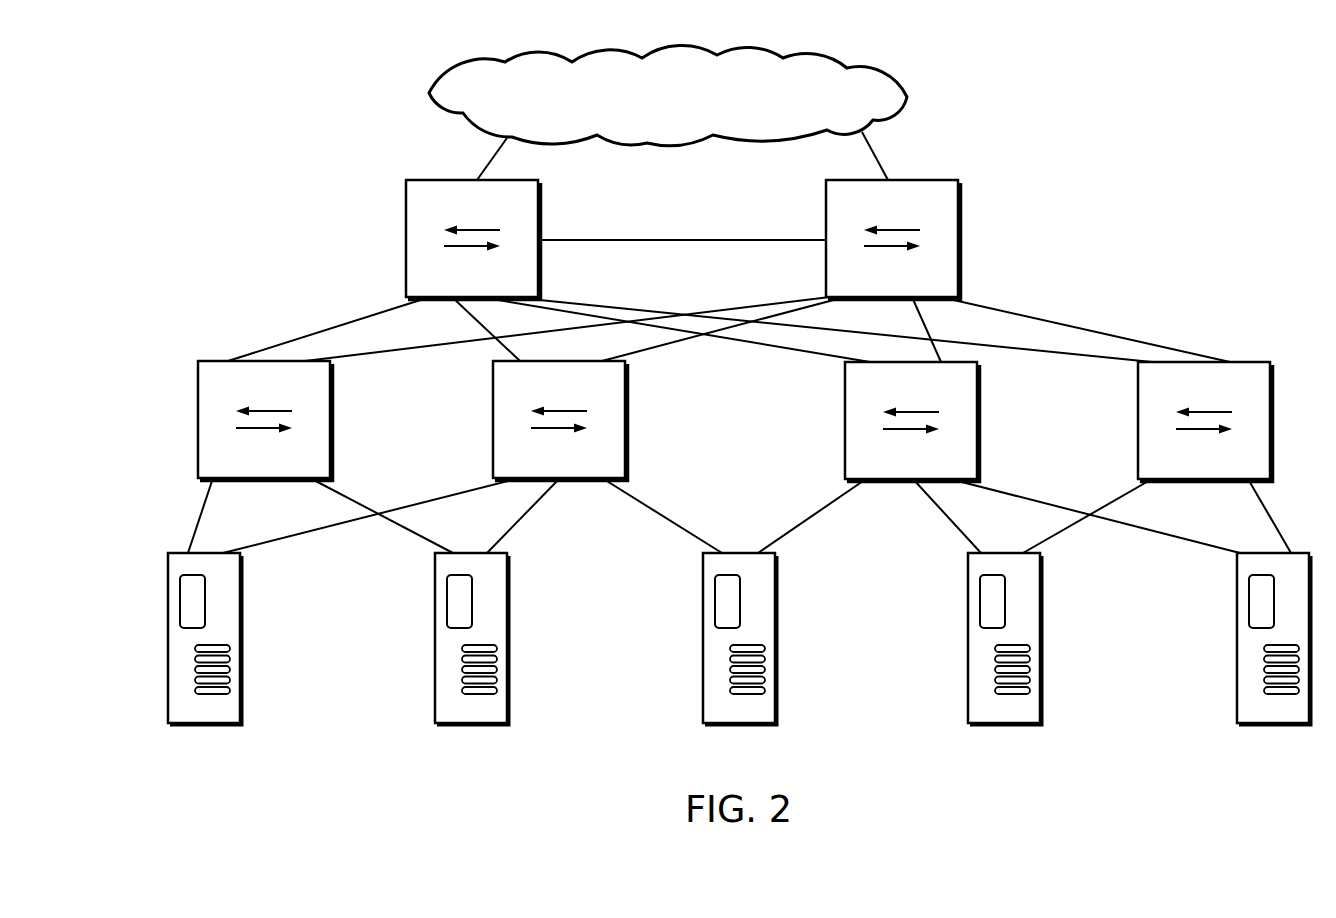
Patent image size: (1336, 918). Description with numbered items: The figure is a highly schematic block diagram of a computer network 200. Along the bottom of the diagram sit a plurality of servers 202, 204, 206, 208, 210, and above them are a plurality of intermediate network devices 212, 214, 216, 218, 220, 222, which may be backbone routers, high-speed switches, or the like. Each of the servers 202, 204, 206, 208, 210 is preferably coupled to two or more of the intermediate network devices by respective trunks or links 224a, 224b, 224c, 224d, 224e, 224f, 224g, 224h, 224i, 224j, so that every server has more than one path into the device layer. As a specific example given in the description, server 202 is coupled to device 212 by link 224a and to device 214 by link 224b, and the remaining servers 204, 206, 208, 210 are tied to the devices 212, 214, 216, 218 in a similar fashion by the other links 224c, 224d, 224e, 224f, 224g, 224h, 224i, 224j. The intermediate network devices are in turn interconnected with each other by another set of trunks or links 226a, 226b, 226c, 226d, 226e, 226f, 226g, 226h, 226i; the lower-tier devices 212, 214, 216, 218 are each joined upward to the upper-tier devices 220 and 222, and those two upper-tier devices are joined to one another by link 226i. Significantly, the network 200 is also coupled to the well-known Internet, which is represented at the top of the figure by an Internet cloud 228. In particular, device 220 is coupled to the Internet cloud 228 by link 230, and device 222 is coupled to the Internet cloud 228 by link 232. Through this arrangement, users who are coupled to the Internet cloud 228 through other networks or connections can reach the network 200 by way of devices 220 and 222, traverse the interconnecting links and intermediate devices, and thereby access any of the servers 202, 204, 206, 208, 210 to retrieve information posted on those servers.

The computer network 200 is at (1100, 146).
The server 202 is at (242, 651).
The server 204 is at (435, 651).
The server 206 is at (703, 651).
The server 208 is at (968, 651).
The server 210 is at (1237, 651).
The intermediate network device 212 is at (198, 420).
The intermediate network device 214 is at (627, 420).
The intermediate network device 216 is at (845, 421).
The intermediate network device 218 is at (1272, 421).
The intermediate network device 220 is at (406, 240).
The intermediate network device 222 is at (960, 240).
The link 224a is at (203, 507).
The link 224b is at (347, 495).
The link 224c is at (413, 538).
The link 224d is at (535, 505).
The link 224e is at (691, 537).
The link 224f is at (833, 502).
The link 224g is at (967, 541).
The link 224h is at (1115, 502).
The link 224i is at (1177, 540).
The link 224j is at (1270, 513).
The link 226a is at (336, 326).
The link 226b is at (453, 344).
The link 226c is at (481, 325).
The link 226d is at (683, 341).
The link 226e is at (771, 347).
The link 226f is at (936, 352).
The link 226g is at (1048, 353).
The link 226h is at (1033, 318).
The link 226i is at (686, 239).
The Internet cloud 228 is at (682, 125).
The link 230 is at (493, 156).
The link 232 is at (880, 160).